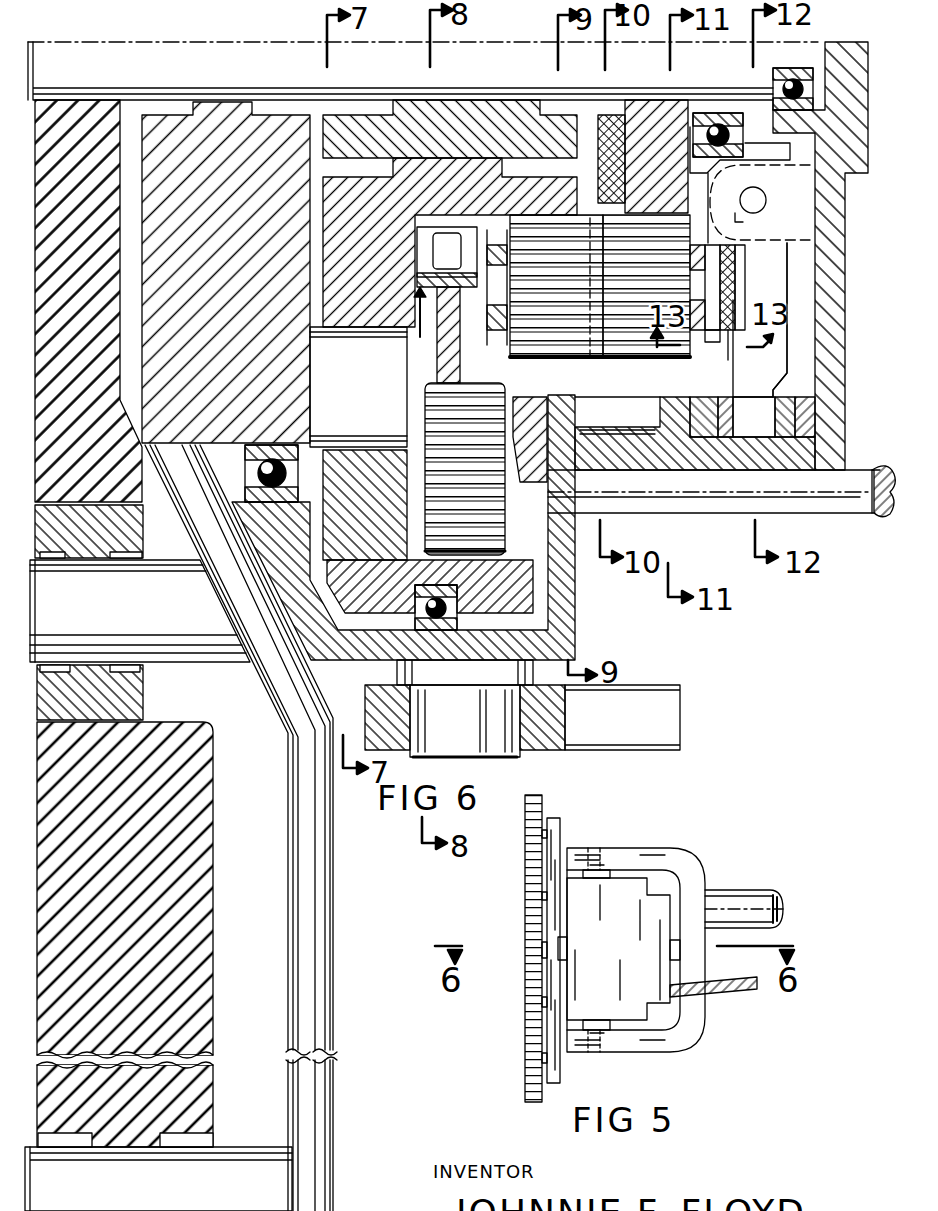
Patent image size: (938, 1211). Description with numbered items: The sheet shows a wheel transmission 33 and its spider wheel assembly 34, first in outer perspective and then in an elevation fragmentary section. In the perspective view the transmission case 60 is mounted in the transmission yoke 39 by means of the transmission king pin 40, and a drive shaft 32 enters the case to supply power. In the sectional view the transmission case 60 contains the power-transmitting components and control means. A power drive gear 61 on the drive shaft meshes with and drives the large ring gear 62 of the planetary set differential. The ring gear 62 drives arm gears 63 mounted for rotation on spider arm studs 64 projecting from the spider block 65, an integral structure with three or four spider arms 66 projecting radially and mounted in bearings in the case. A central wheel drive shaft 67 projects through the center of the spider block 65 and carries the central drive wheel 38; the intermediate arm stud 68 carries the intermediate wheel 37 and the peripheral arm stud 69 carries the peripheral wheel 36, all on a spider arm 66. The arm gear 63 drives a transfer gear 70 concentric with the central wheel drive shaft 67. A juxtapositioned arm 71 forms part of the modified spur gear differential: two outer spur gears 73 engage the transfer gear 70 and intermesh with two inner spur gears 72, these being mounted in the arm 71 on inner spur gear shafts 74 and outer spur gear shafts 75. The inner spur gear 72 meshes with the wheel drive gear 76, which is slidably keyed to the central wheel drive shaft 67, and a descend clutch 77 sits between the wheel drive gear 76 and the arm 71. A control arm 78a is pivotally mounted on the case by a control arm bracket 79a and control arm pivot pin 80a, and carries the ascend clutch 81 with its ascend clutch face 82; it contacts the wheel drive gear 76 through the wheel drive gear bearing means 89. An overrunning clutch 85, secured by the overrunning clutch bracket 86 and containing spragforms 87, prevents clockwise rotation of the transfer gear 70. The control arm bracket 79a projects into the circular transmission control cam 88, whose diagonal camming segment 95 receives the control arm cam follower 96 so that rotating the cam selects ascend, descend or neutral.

In FIG. 6, the drive shaft 32 is at (690, 519).
In FIG. 5, the drive shaft 32 is at (723, 993).
In FIG. 5, the wheel transmission 33 is at (618, 949).
In FIG. 5, the spider wheel assembly 34 is at (517, 831).
In FIG. 6, the peripheral wheel 36 is at (125, 934).
In FIG. 5, the peripheral wheel 36 is at (523, 814).
In FIG. 6, the intermediate wheel 37 is at (89, 612).
In FIG. 5, the intermediate wheel 37 is at (523, 893).
In FIG. 6, the central drive wheel 38 is at (88, 301).
In FIG. 5, the central drive wheel 38 is at (523, 944).
In FIG. 5, the transmission yoke 39 is at (690, 857).
In FIG. 5, the transmission king pin 40 is at (590, 849).
In FIG. 6, the transmission case 60 is at (572, 600).
In FIG. 6, the power drive gear 61 is at (505, 388).
In FIG. 6, the ring gear 62 is at (430, 595).
In FIG. 6, the arm gear 63 is at (365, 505).
In FIG. 6, the spider arm stud 64 is at (358, 387).
In FIG. 6, the spider block 65 is at (226, 272).
In FIG. 6, the spider arm 66 is at (241, 828).
In FIG. 6, the central wheel drive shaft 67 is at (423, 71).
In FIG. 6, the intermediate arm stud 68 is at (140, 611).
In FIG. 6, the peripheral arm stud 69 is at (158, 1179).
In FIG. 6, the transfer gear 70 is at (450, 242).
In FIG. 6, the arm 71 is at (755, 262).
In FIG. 6, the inner spur gear 72 is at (646, 286).
In FIG. 6, the outer spur gear 73 is at (600, 286).
In FIG. 6, the inner spur gear shaft 74 is at (739, 287).
In FIG. 6, the outer spur gear shaft 75 is at (493, 326).
In FIG. 6, the wheel drive gear 76 is at (656, 156).
In FIG. 6, the descend clutch 77 is at (612, 159).
In FIG. 6, the control arm 78a is at (767, 320).
In FIG. 6, the control arm bracket 79a is at (773, 196).
In FIG. 6, the control arm pivot pin 80a is at (756, 228).
In FIG. 6, the ascend clutch 81 is at (718, 355).
In FIG. 6, the ascend clutch face 82 is at (708, 330).
In FIG. 6, the overrunning clutch 85 is at (417, 323).
In FIG. 6, the overrunning clutch bracket 86 is at (461, 348).
In FIG. 6, the spragforms 87 is at (447, 257).
In FIG. 6, the circular transmission control cam 88 is at (700, 397).
In FIG. 6, the wheel drive gear bearing means 89 is at (746, 109).
In FIG. 6, the diagonal camming segment 95 is at (779, 397).
In FIG. 6, the control arm cam follower 96 is at (754, 417).